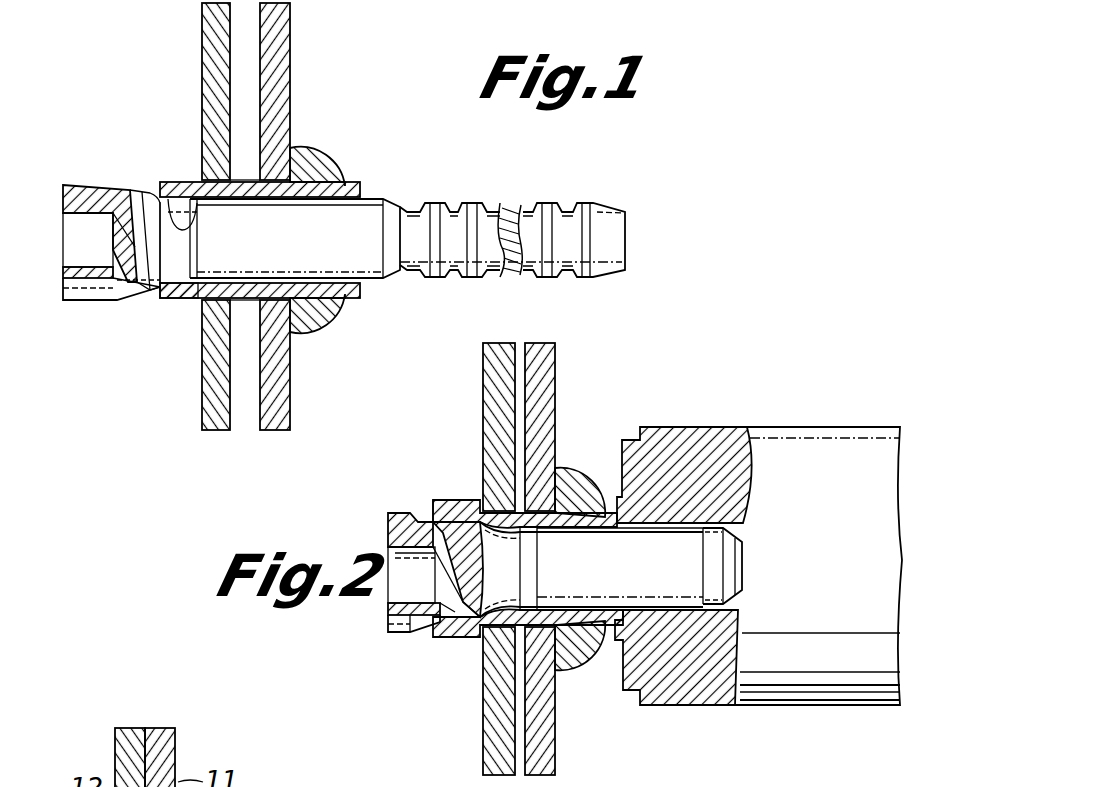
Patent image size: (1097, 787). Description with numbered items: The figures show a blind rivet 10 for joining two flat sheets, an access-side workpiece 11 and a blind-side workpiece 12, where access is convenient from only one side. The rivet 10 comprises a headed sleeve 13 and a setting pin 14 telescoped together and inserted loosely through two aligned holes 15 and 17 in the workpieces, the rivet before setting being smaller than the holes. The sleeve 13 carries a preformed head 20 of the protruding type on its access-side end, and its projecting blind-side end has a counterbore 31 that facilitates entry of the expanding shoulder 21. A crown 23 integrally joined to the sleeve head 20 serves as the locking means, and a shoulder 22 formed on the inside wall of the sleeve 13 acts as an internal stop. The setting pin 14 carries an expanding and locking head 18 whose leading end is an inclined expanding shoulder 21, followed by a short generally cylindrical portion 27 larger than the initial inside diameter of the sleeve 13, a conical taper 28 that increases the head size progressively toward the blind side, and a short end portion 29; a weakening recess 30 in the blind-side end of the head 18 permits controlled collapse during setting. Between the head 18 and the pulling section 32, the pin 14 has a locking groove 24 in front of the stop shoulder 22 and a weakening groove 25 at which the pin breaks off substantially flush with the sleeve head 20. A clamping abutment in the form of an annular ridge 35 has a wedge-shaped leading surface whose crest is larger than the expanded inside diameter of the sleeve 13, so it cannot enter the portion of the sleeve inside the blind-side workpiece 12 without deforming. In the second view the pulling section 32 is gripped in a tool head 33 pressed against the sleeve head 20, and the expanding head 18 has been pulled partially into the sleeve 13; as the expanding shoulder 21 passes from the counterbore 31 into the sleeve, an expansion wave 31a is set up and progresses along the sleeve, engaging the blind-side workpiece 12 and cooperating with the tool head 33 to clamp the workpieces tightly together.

In FIG. 1, the blind rivet 10 is at (402, 184).
In FIG. 1, the access-side workpiece 11 is at (291, 38).
In FIG. 2, the access-side workpiece 11 is at (557, 384).
In FIG. 1, the blind-side workpiece 12 is at (200, 36).
In FIG. 2, the blind-side workpiece 12 is at (485, 385).
In FIG. 1, the headed sleeve 13 is at (245, 176).
In FIG. 2, the headed sleeve 13 is at (520, 503).
In FIG. 1, the setting pin 14 is at (375, 286).
In FIG. 1, the hole in access-side workpiece 15 is at (240, 300).
In FIG. 1, the hole in blind-side workpiece 17 is at (175, 300).
In FIG. 1, the expanding and locking head 18 is at (55, 292).
In FIG. 1, the preformed head 20 is at (322, 322).
In FIG. 1, the expanding shoulder 21 is at (128, 308).
In FIG. 1, the stop shoulder 22 is at (292, 192).
In FIG. 1, the crown 23 is at (348, 190).
In FIG. 2, the crown 23 is at (612, 505).
In FIG. 2, the locking groove 24 is at (500, 528).
In FIG. 2, the weakening groove 25 is at (540, 590).
In FIG. 1, the cylindrical portion 27 is at (128, 190).
In FIG. 2, the cylindrical portion 27 is at (465, 625).
In FIG. 1, the conical taper 28 is at (100, 188).
In FIG. 1, the end portion 29 is at (78, 182).
In FIG. 1, the weakening recess 30 is at (68, 222).
In FIG. 2, the weakening recess 30 is at (392, 598).
In FIG. 1, the counterbore 31 is at (173, 206).
In FIG. 2, the counterbore 31 is at (415, 530).
In FIG. 2, the expansion wave 31a is at (478, 500).
In FIG. 1, the pulling section 32 is at (543, 205).
In FIG. 2, the pulling section 32 is at (742, 572).
In FIG. 2, the tool head 33 is at (795, 435).
In FIG. 1, the annular ridge 35 is at (148, 188).
In FIG. 2, the annular ridge 35 is at (485, 470).